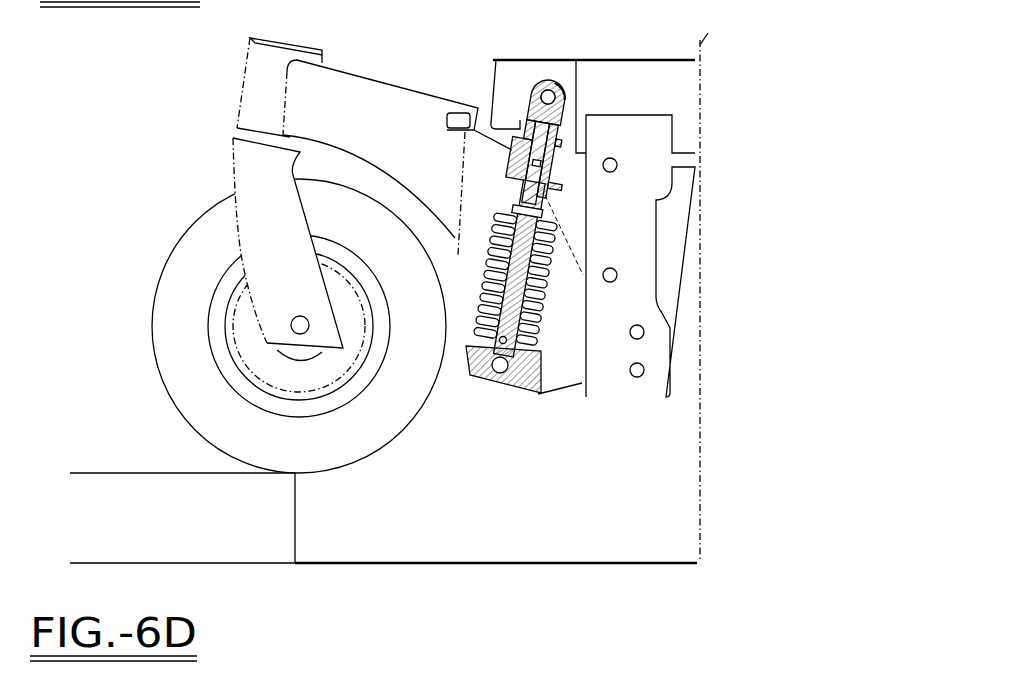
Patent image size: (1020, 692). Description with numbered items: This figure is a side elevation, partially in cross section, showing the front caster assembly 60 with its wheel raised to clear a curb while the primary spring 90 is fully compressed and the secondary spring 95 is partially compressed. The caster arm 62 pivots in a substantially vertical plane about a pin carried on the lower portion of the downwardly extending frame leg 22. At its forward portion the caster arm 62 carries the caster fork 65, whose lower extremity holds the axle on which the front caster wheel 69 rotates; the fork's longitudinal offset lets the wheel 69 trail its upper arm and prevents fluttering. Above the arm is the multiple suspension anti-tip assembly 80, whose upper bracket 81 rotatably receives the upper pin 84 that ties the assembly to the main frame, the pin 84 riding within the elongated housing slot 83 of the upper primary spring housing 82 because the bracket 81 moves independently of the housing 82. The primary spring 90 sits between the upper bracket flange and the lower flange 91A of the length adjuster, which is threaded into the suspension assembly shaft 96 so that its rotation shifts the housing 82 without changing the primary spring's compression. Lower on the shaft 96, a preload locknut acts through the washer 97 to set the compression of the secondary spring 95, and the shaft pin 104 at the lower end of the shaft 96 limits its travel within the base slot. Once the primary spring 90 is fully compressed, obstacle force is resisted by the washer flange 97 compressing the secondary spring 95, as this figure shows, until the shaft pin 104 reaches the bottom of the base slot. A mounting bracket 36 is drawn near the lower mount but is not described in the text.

The frame leg 22 is at (695, 167).
The mounting bracket 36 is at (526, 380).
The front caster assembly 60 is at (297, 238).
The caster arm 62 is at (370, 88).
The caster fork 65 is at (238, 190).
The front caster wheel 69 is at (167, 257).
The multiple suspension anti-tip assembly 80 is at (542, 220).
The upper bracket 81 is at (567, 110).
The upper primary spring housing 82 is at (557, 80).
The housing slot 83 is at (546, 82).
The upper pin 84 is at (540, 94).
The primary spring 90 is at (553, 166).
The lower flange 91A is at (508, 176).
The secondary spring 95 is at (537, 348).
The suspension assembly shaft 96 is at (515, 298).
The washer 97 is at (540, 232).
The shaft pin 104 is at (500, 383).